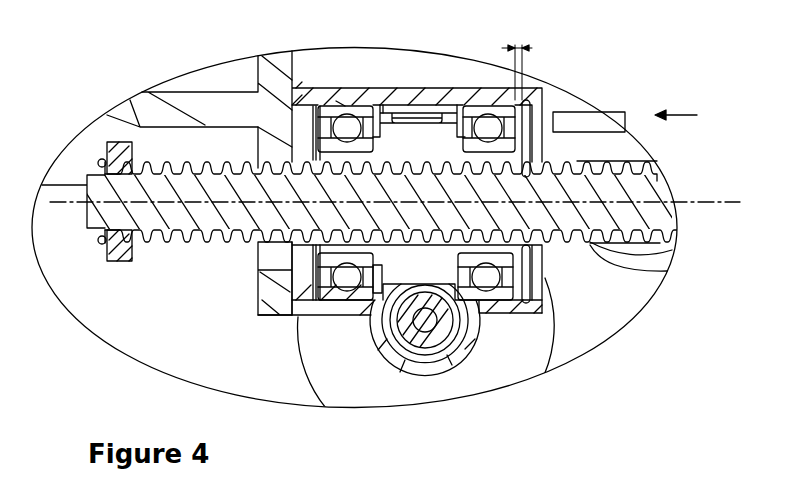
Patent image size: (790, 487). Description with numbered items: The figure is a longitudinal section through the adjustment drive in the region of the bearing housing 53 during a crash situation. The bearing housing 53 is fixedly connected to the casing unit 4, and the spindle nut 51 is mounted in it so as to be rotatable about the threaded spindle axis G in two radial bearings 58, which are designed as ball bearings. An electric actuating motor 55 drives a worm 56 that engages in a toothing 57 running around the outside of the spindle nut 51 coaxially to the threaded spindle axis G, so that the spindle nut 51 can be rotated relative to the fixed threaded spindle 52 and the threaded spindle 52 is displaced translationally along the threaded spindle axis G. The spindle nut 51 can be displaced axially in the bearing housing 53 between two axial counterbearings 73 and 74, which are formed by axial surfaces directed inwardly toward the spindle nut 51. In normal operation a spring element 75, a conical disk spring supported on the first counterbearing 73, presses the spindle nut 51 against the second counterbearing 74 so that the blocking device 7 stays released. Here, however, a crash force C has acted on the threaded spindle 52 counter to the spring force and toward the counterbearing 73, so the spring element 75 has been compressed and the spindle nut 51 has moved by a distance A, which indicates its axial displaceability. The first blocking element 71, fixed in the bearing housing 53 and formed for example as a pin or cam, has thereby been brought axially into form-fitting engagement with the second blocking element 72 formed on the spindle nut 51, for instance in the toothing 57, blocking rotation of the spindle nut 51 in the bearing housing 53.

The casing unit 4 is at (273, 295).
The blocking device 7 is at (377, 82).
The spindle nut 51 is at (440, 133).
The threaded spindle 52 is at (648, 198).
The bearing housing 53 is at (475, 97).
The electric actuating motor 55 is at (520, 335).
The worm 56 is at (437, 338).
The toothing 57 is at (417, 110).
The radial bearings 58 is at (334, 117).
The first blocking element 71 is at (378, 100).
The second blocking element 72 is at (395, 102).
The first counterbearing 73 is at (292, 150).
The second counterbearing 74 is at (527, 115).
The spring element 75 is at (290, 132).
The distance A is at (540, 45).
The crash force C is at (685, 110).
The threaded spindle axis G is at (729, 200).